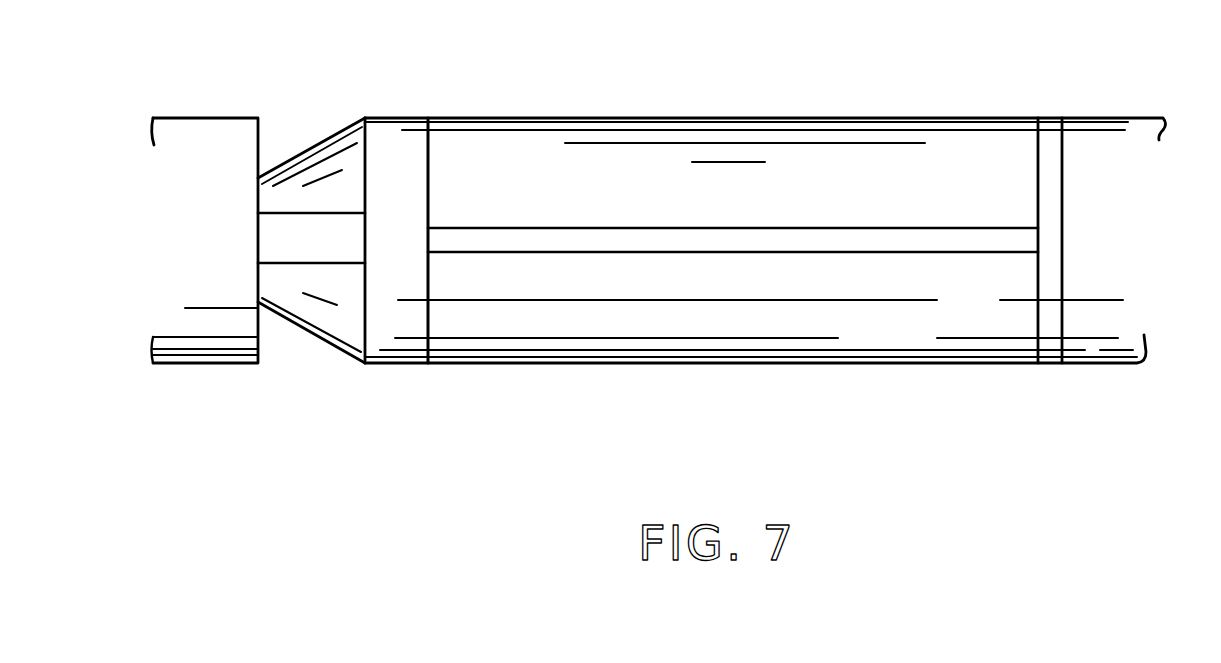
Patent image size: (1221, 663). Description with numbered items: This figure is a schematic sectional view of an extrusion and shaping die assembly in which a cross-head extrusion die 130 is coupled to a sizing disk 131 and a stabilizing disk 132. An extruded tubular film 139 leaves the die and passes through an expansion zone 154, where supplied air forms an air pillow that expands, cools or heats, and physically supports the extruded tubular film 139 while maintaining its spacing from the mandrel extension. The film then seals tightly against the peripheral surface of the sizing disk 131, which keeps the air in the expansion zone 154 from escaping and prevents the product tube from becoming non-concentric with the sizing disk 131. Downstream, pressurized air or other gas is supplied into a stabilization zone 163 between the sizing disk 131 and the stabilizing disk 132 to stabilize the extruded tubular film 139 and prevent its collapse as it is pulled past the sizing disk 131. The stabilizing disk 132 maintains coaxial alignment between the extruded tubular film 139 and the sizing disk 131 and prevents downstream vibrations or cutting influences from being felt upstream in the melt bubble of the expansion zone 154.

The cross-head extrusion die 130 is at (138, 362).
The sizing disk 131 is at (428, 188).
The stabilizing disk 132 is at (1065, 165).
The extruded tubular film 139 is at (787, 118).
The expansion zone 154 is at (330, 160).
The stabilization zone 163 is at (917, 327).